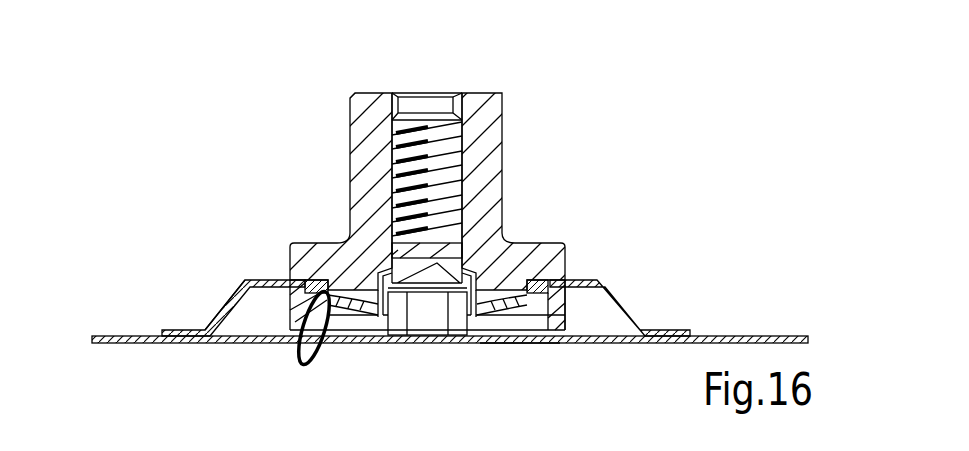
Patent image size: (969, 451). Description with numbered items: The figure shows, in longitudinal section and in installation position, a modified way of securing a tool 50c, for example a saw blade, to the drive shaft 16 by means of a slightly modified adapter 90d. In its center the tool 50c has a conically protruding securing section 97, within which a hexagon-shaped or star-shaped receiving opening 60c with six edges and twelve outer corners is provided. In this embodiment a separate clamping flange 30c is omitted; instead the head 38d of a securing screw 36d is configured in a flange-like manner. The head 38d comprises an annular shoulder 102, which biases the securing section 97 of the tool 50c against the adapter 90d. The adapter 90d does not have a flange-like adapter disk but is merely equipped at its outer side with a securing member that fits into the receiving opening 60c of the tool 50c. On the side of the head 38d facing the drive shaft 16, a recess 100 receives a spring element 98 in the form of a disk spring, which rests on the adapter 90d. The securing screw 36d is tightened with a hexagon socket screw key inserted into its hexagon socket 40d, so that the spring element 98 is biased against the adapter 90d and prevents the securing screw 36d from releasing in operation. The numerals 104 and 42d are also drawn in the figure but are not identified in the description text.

The drive shaft 16 is at (362, 168).
The end cap 104 is at (463, 93).
The threaded bore 42d is at (447, 167).
The hexagon socket 40d is at (433, 318).
The head 38d is at (325, 345).
The adapter 90d is at (540, 280).
The annular shoulder 102 is at (560, 305).
The recess 100 is at (535, 320).
The receiving opening 60c is at (283, 333).
The securing section 97 is at (238, 282).
The tool 50c is at (670, 317).
The securing screw 36d is at (517, 343).
The spring element 98 is at (300, 363).
The clamping flange 30c is at (212, 4).